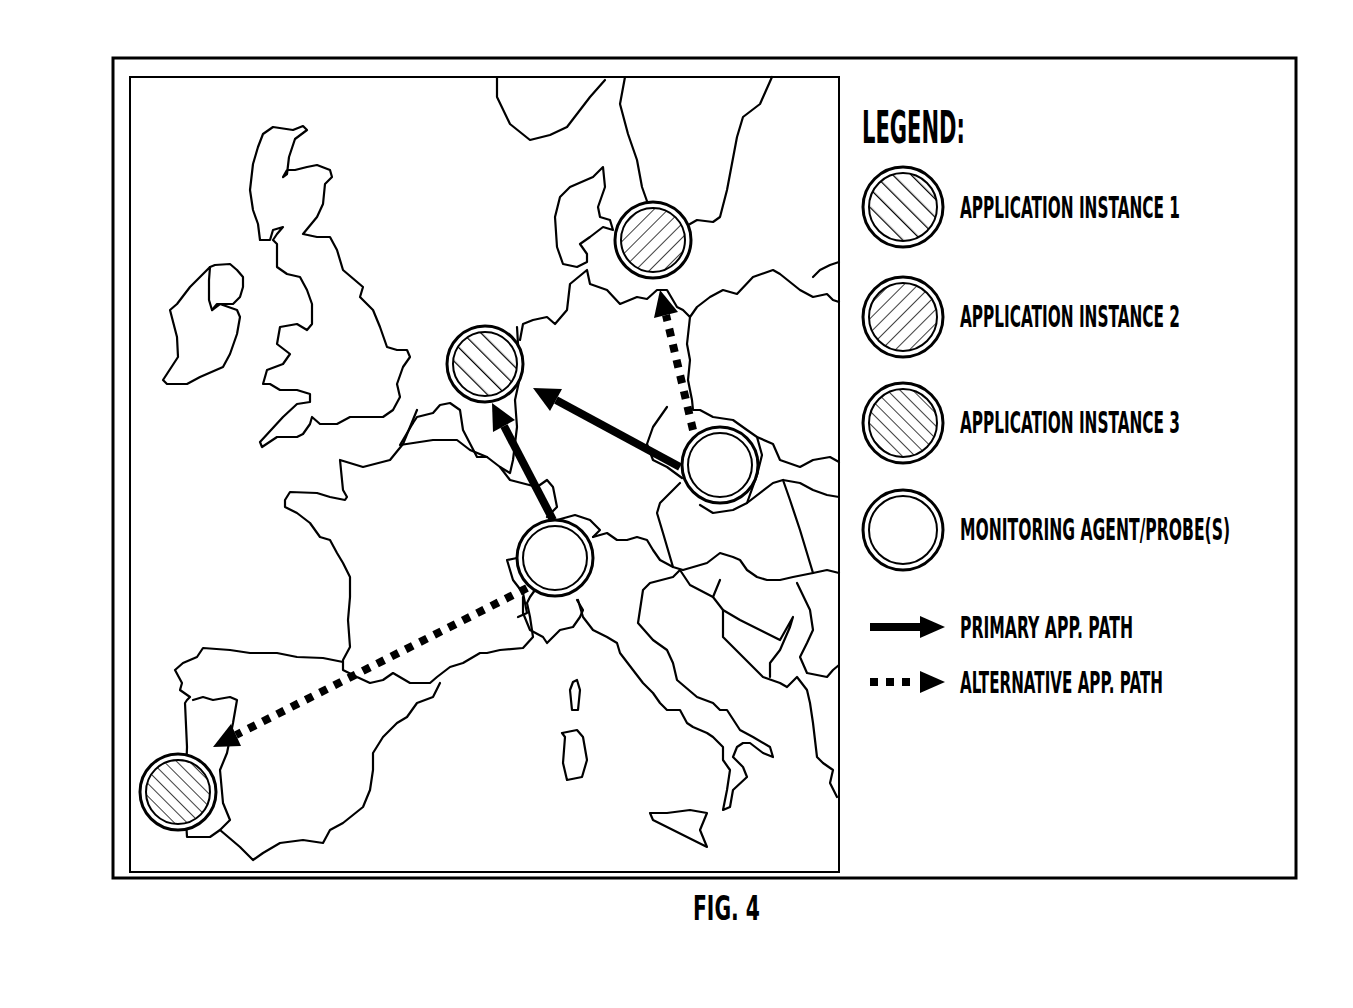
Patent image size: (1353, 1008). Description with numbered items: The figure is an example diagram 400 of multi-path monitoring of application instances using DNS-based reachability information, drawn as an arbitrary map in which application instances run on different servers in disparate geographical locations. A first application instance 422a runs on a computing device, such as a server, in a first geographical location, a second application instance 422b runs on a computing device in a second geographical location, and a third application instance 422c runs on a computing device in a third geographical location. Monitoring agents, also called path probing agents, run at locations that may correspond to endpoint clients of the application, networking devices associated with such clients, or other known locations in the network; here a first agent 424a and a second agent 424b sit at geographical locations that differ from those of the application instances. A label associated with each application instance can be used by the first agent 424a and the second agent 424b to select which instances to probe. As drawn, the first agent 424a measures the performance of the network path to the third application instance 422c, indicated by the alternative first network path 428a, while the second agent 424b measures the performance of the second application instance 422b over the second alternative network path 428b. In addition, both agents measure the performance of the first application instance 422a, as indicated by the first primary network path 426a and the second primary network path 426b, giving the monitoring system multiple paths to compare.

The example diagram 400 is at (1190, 36).
The first application instance 422a is at (467, 310).
The second application instance 422b is at (639, 193).
The third application instance 422c is at (171, 743).
The first agent 424a is at (578, 601).
The second agent 424b is at (722, 506).
The first primary network path 426a is at (506, 462).
The second primary network path 426b is at (595, 406).
The alternative first network path 428a is at (366, 656).
The second alternative network path 428b is at (694, 362).